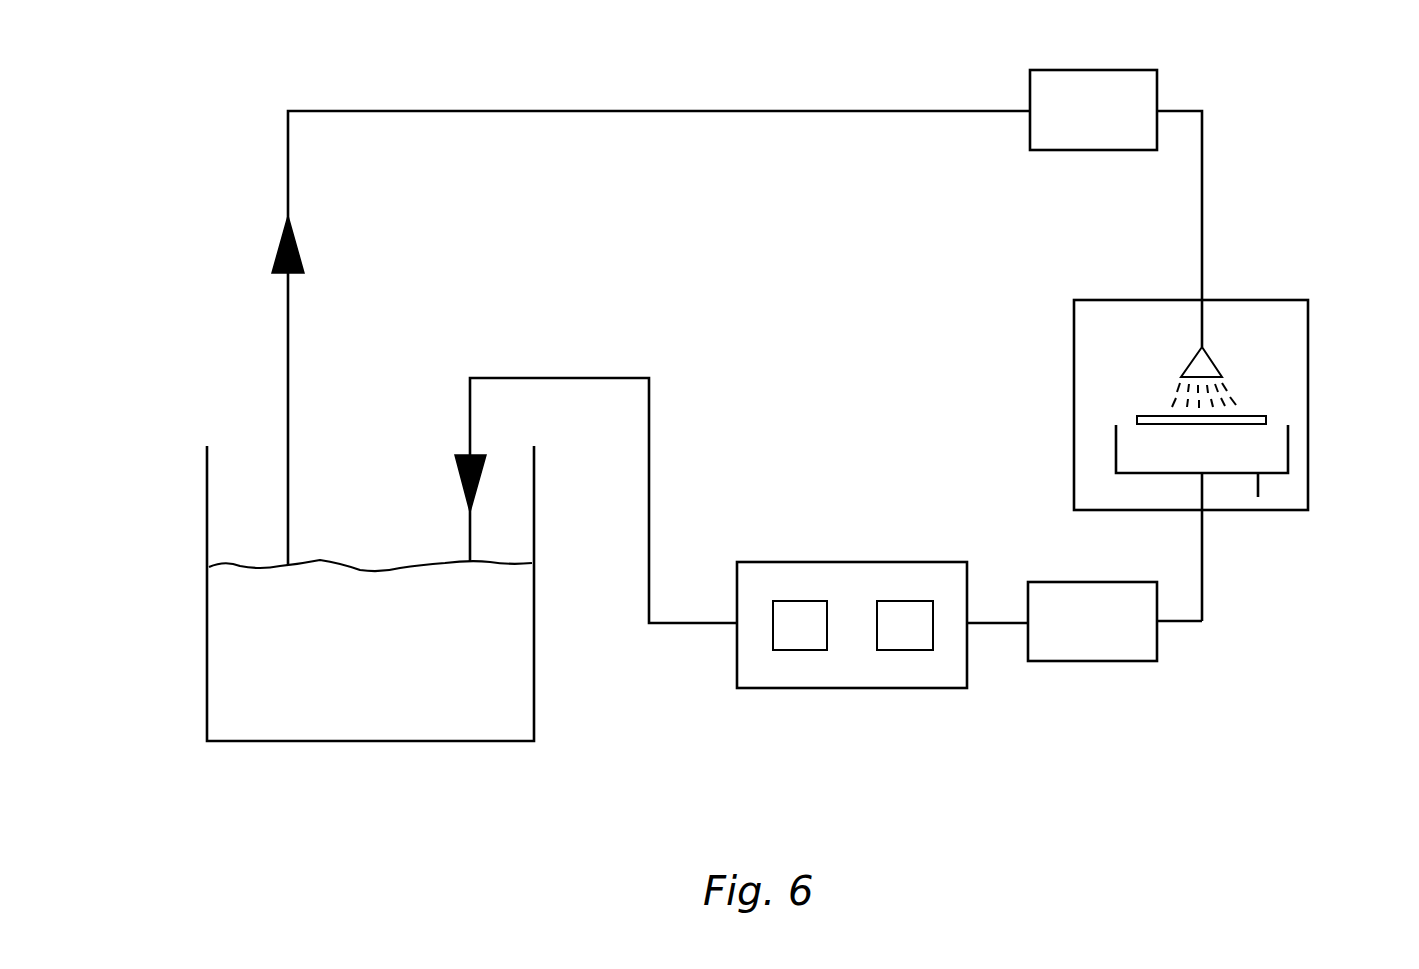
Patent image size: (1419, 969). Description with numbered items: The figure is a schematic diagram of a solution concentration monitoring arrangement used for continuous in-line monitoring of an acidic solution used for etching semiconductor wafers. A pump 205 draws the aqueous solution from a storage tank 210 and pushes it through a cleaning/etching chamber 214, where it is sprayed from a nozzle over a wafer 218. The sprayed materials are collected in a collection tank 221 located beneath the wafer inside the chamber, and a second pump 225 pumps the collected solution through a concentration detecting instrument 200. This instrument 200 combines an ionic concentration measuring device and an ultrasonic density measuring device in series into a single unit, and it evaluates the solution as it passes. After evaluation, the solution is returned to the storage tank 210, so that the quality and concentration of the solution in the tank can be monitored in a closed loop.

The concentration detecting instrument 200 is at (870, 688).
The pump 205 is at (1118, 70).
The storage tank 210 is at (412, 741).
The cleaning/etching chamber 214 is at (1300, 476).
The wafer 218 is at (1146, 416).
The collection tank 221 is at (1258, 497).
The pump 225 is at (1092, 661).